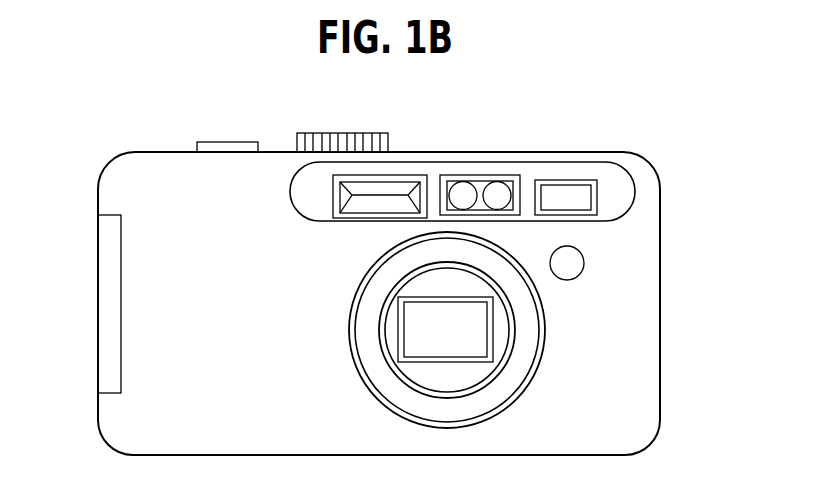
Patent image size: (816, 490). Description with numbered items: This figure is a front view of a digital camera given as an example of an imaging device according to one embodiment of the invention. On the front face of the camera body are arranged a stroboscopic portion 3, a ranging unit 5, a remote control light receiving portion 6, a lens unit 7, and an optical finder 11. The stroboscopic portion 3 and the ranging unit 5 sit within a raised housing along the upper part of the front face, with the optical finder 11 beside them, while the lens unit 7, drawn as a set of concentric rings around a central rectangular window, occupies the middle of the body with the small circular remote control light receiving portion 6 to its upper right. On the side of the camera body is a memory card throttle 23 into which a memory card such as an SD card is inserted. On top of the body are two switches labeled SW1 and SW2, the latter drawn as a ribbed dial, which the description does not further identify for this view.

The release switch SW1 is at (283, 102).
The mode dial switch SW2 is at (413, 99).
The stroboscopic portion 3 is at (395, 183).
The ranging unit 5 is at (478, 183).
The optical finder 11 is at (582, 192).
The memory card throttle 23 is at (111, 261).
The remote control light receiving portion 6 is at (568, 267).
The lens unit 7 is at (467, 373).